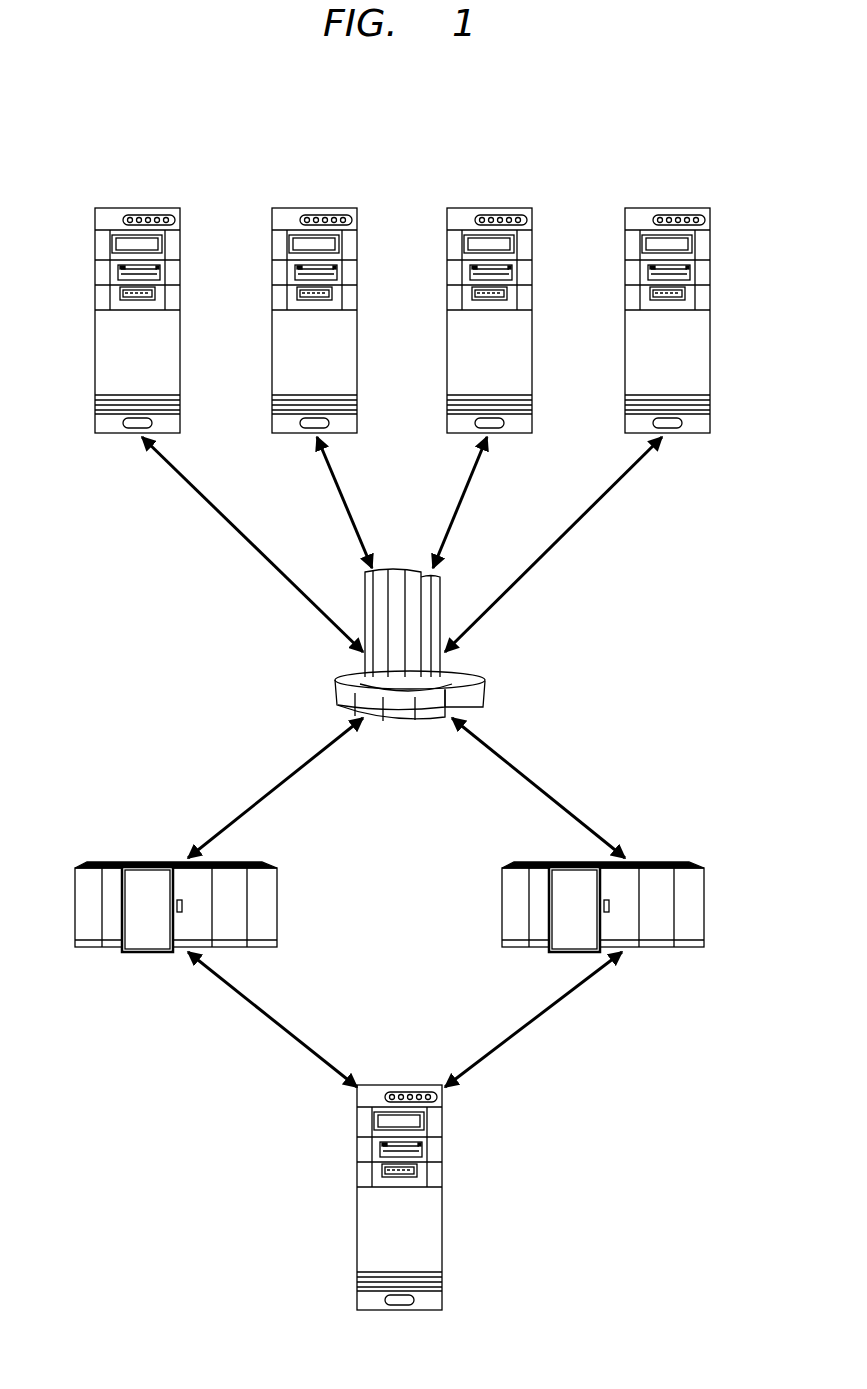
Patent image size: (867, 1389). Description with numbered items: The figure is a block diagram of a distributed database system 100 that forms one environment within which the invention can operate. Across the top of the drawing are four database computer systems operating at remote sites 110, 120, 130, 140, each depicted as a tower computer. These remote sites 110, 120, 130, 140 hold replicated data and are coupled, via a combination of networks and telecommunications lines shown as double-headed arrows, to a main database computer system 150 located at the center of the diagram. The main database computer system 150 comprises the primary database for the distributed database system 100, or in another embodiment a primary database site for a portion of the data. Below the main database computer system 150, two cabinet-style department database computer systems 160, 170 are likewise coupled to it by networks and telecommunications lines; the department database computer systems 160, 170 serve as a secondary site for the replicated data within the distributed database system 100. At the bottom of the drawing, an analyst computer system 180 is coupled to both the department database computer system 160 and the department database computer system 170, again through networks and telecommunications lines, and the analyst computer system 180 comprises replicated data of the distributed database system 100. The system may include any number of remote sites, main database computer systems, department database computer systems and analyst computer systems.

The distributed database system 100 is at (672, 99).
The remote site 110 is at (100, 207).
The remote site 120 is at (281, 207).
The remote site 130 is at (456, 207).
The remote site 140 is at (634, 208).
The main database computer system 150 is at (402, 569).
The department database computer system 160 is at (85, 862).
The department database computer system 170 is at (512, 862).
The analyst computer system 180 is at (398, 1084).